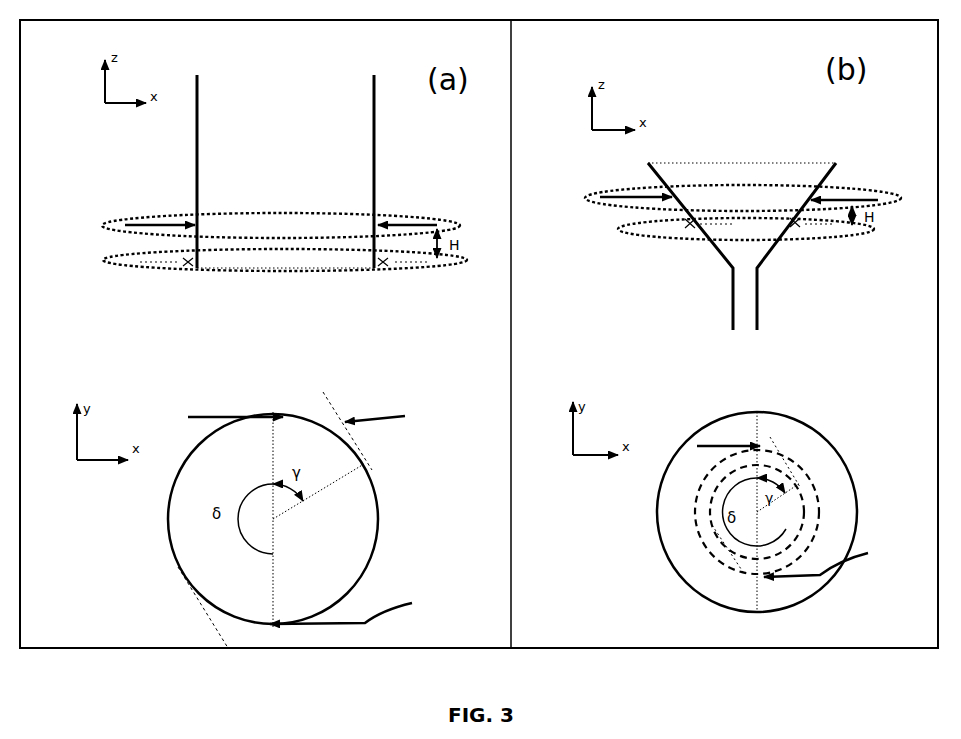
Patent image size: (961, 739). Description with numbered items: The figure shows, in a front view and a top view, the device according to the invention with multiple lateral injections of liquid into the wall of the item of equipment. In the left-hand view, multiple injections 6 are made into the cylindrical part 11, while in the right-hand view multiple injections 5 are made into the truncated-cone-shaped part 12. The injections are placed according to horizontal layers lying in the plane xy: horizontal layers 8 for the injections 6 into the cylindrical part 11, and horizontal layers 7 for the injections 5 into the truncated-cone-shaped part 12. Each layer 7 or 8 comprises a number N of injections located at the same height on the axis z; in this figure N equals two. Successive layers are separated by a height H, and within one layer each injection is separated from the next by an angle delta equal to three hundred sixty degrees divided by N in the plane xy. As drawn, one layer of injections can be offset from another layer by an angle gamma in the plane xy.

The injection 5 is at (645, 224).
The injection 6 is at (140, 262).
The horizontal layer 7 is at (650, 237).
The horizontal layer 8 is at (186, 213).
The cylindrical part 11 is at (375, 157).
The truncated-cone-shaped part 12 is at (718, 255).